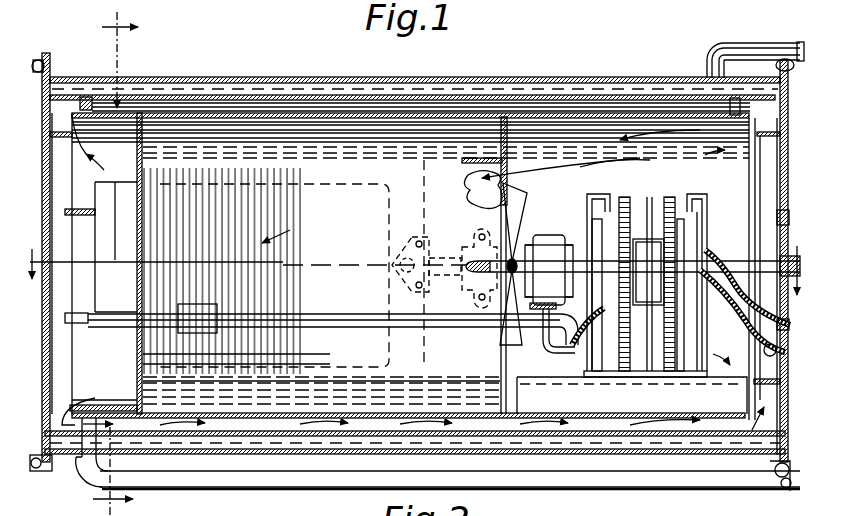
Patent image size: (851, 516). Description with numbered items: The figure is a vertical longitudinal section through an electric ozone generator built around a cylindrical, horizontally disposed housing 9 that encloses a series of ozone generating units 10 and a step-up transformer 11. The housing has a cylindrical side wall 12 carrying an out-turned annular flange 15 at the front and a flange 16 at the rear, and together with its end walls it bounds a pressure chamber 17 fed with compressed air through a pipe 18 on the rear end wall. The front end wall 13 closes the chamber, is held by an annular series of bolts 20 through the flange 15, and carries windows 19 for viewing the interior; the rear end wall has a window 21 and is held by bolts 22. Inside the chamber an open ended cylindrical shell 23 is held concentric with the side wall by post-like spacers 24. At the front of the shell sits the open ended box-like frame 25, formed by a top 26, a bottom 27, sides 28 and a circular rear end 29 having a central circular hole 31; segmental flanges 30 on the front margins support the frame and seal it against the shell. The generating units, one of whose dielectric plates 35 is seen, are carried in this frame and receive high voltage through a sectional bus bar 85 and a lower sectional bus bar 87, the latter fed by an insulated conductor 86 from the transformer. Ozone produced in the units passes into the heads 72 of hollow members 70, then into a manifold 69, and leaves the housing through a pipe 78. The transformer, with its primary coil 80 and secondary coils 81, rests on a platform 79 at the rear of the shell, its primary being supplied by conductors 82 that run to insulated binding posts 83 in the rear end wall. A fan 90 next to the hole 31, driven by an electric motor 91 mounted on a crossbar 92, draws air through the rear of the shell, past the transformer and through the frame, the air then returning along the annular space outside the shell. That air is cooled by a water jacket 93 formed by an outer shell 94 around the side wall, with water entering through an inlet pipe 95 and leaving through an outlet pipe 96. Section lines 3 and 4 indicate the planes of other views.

The section line 3- 3 is at (413, 261).
The section line 4- 4 is at (105, 260).
The housing 9 is at (228, 93).
The ozone generating units 10 is at (106, 305).
The step-up transformer 11 is at (648, 304).
The side wall 12 is at (150, 97).
The front end wall 13 is at (45, 56).
The annular flange 15 is at (56, 70).
The annular flange 16 is at (780, 456).
The pressure chamber 17 is at (540, 99).
The pipe 18 is at (785, 272).
The windows 19 is at (55, 172).
The bolts 20 is at (56, 62).
The window 21 is at (778, 208).
The bolts 22 is at (786, 82).
The cylindrical shell 23 is at (287, 114).
The spacers 24 is at (92, 100).
The box-like frame 25 is at (284, 230).
The top 26 is at (348, 176).
The bottom 27 is at (332, 380).
The sides 28 is at (321, 286).
The rear end 29 is at (509, 156).
The segmental flanges 30 is at (162, 172).
The circular hole 31 is at (508, 183).
The dielectric plate 35 is at (117, 229).
The manifold 69 is at (468, 238).
The hollow members 70 is at (447, 272).
The heads 72 is at (408, 240).
The pipe 78 is at (650, 272).
The platform 79 is at (636, 378).
The primary coil 80 is at (640, 238).
The secondary coils 81 is at (660, 194).
The conductors 82 is at (732, 305).
The binding posts 83 is at (766, 354).
The sectional bus bar 85 is at (75, 215).
The insulated conductor 86 is at (352, 318).
The sectional bus bar 87 is at (65, 314).
The fan 90 is at (528, 194).
The electric motor 91 is at (547, 236).
The crossbar 92 is at (552, 332).
The water jacket 93 is at (243, 438).
The outer shell 94 is at (298, 457).
The inlet pipe 95 is at (174, 489).
The outlet pipe 96 is at (746, 46).